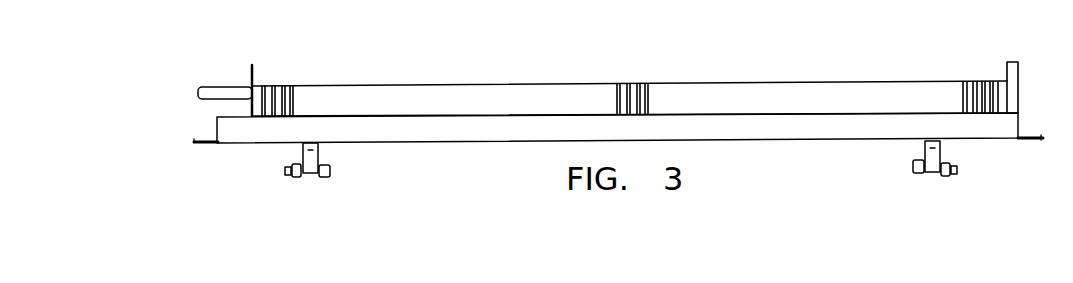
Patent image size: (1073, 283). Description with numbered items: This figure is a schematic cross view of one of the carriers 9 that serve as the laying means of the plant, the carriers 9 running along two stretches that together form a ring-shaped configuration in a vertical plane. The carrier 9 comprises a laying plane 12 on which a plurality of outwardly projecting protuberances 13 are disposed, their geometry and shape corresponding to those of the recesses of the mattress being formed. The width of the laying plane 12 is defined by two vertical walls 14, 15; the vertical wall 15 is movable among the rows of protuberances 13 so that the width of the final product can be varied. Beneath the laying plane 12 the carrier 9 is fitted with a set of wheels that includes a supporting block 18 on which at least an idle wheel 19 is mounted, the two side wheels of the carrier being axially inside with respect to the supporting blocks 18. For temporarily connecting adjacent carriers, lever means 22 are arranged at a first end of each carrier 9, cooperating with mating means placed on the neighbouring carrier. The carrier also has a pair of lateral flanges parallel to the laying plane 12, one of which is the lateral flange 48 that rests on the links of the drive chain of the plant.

The carrier 9 is at (774, 67).
The laying plane 12 is at (412, 115).
The protuberances 13 is at (292, 112).
The vertical wall 14 is at (1018, 62).
The vertical wall 15 is at (250, 70).
The supporting block 18 is at (320, 152).
The idle wheel 19 is at (330, 172).
The lever means 22 is at (283, 168).
The lateral flange 48 is at (1041, 136).